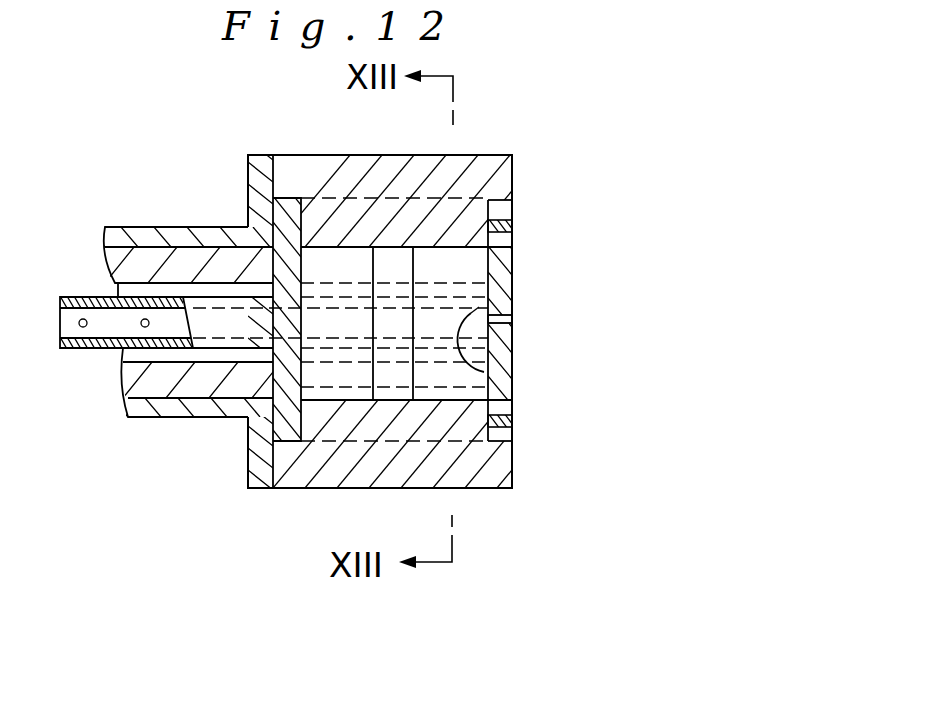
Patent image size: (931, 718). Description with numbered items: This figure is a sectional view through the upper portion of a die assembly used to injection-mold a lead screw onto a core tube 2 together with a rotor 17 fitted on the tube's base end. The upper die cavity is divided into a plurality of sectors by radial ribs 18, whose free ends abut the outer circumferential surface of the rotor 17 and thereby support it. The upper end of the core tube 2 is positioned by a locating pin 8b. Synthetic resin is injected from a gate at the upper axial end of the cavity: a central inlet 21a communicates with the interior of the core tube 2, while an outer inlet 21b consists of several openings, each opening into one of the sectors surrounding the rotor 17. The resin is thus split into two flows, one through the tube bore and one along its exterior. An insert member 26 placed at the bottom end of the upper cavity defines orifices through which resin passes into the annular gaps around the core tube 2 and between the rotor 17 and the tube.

The core tube 2 is at (95, 350).
The locating pin 8b is at (484, 372).
The rotor 17 is at (345, 416).
The radial ribs 18 is at (469, 231).
The central inlet 21a is at (512, 321).
The outer inlet 21b is at (512, 223).
The insert member 26 is at (290, 232).